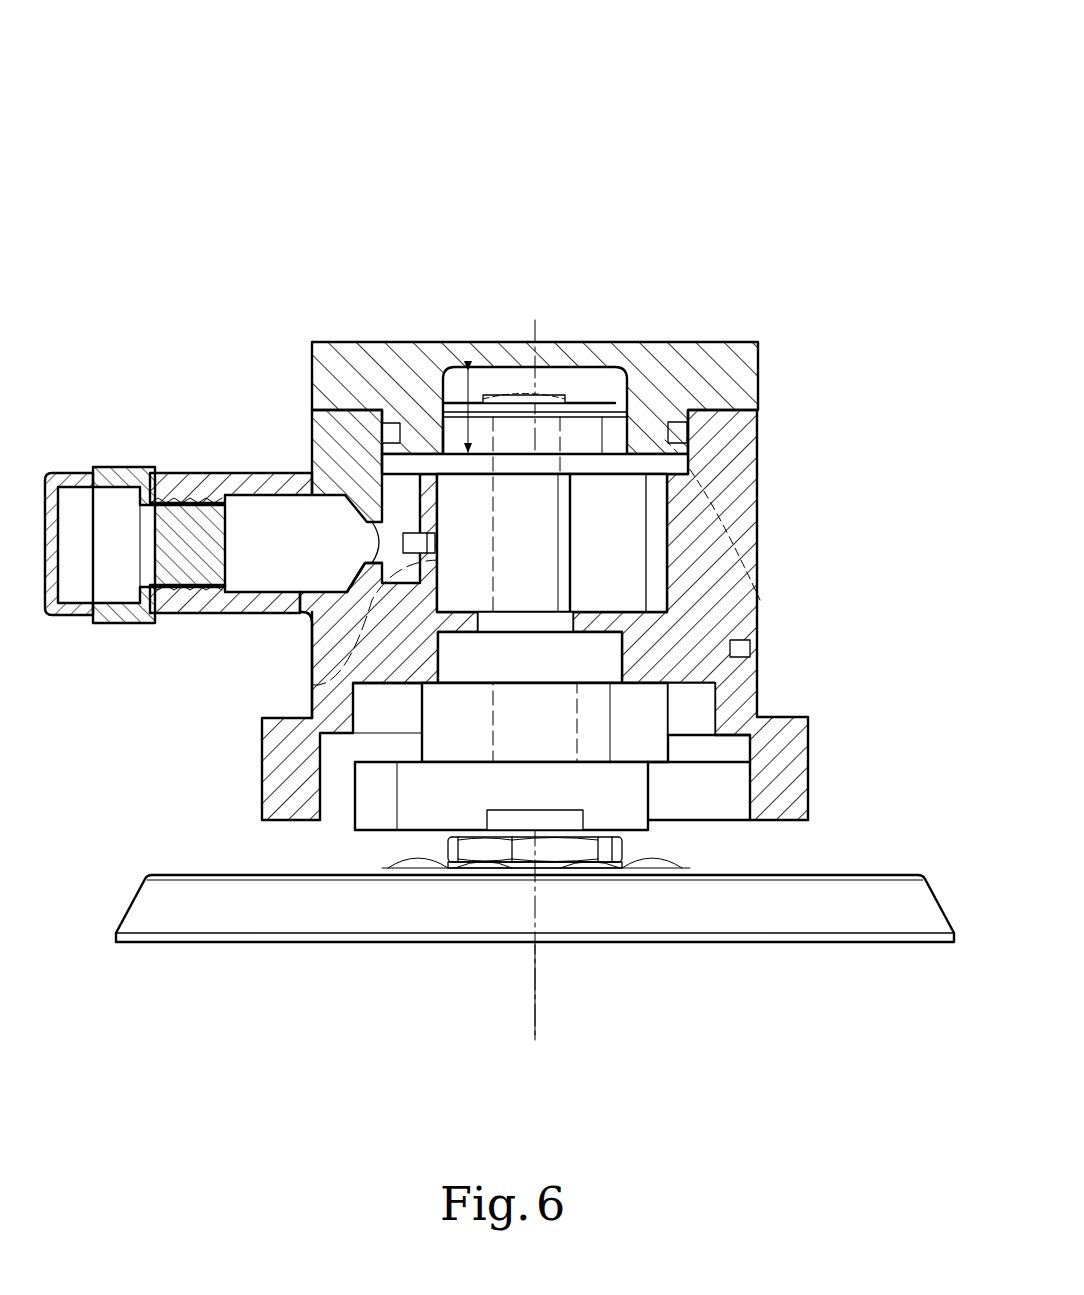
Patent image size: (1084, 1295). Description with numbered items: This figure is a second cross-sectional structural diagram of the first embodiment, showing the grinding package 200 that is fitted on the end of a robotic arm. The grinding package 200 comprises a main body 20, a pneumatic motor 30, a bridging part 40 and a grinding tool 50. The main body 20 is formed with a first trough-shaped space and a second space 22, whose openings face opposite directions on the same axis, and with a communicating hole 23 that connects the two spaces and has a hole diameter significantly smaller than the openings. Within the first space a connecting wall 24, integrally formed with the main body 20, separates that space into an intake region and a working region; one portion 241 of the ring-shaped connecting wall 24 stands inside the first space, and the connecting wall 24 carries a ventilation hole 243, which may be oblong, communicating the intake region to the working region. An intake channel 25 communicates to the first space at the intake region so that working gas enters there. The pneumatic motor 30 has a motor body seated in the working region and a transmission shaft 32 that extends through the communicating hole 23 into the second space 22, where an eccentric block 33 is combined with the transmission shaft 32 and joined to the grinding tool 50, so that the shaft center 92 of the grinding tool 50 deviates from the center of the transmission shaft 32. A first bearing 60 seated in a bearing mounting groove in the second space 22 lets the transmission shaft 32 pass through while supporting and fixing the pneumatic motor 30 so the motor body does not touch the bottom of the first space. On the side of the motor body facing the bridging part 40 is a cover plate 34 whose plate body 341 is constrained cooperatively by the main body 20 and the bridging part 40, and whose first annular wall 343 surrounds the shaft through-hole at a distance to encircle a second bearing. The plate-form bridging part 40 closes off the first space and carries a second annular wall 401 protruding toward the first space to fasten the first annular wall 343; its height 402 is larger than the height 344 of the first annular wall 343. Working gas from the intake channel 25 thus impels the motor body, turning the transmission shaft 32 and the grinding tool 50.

The grinding package 200 is at (910, 53).
The main body 20 is at (760, 525).
The second space 22 is at (335, 818).
The communicating hole 23 is at (580, 625).
The connecting wall 24 is at (166, 480).
The portion of the connecting wall 241 is at (412, 455).
The ventilation hole 243 is at (325, 600).
The intake channel 25 is at (250, 472).
The pneumatic motor 30 is at (656, 516).
The transmission shaft 32 is at (315, 690).
The eccentric block 33 is at (652, 796).
The cover plate 34 is at (538, 446).
The plate body 341 is at (694, 400).
The first annular wall 343 is at (612, 378).
The height of the first annular wall 344 is at (600, 446).
The bridging part 40 is at (360, 350).
The second annular wall 401 is at (432, 372).
The height of the second annular wall 402 is at (468, 366).
The grinding tool 50 is at (795, 945).
The first bearing 60 is at (752, 648).
The shaft center 92 is at (540, 992).